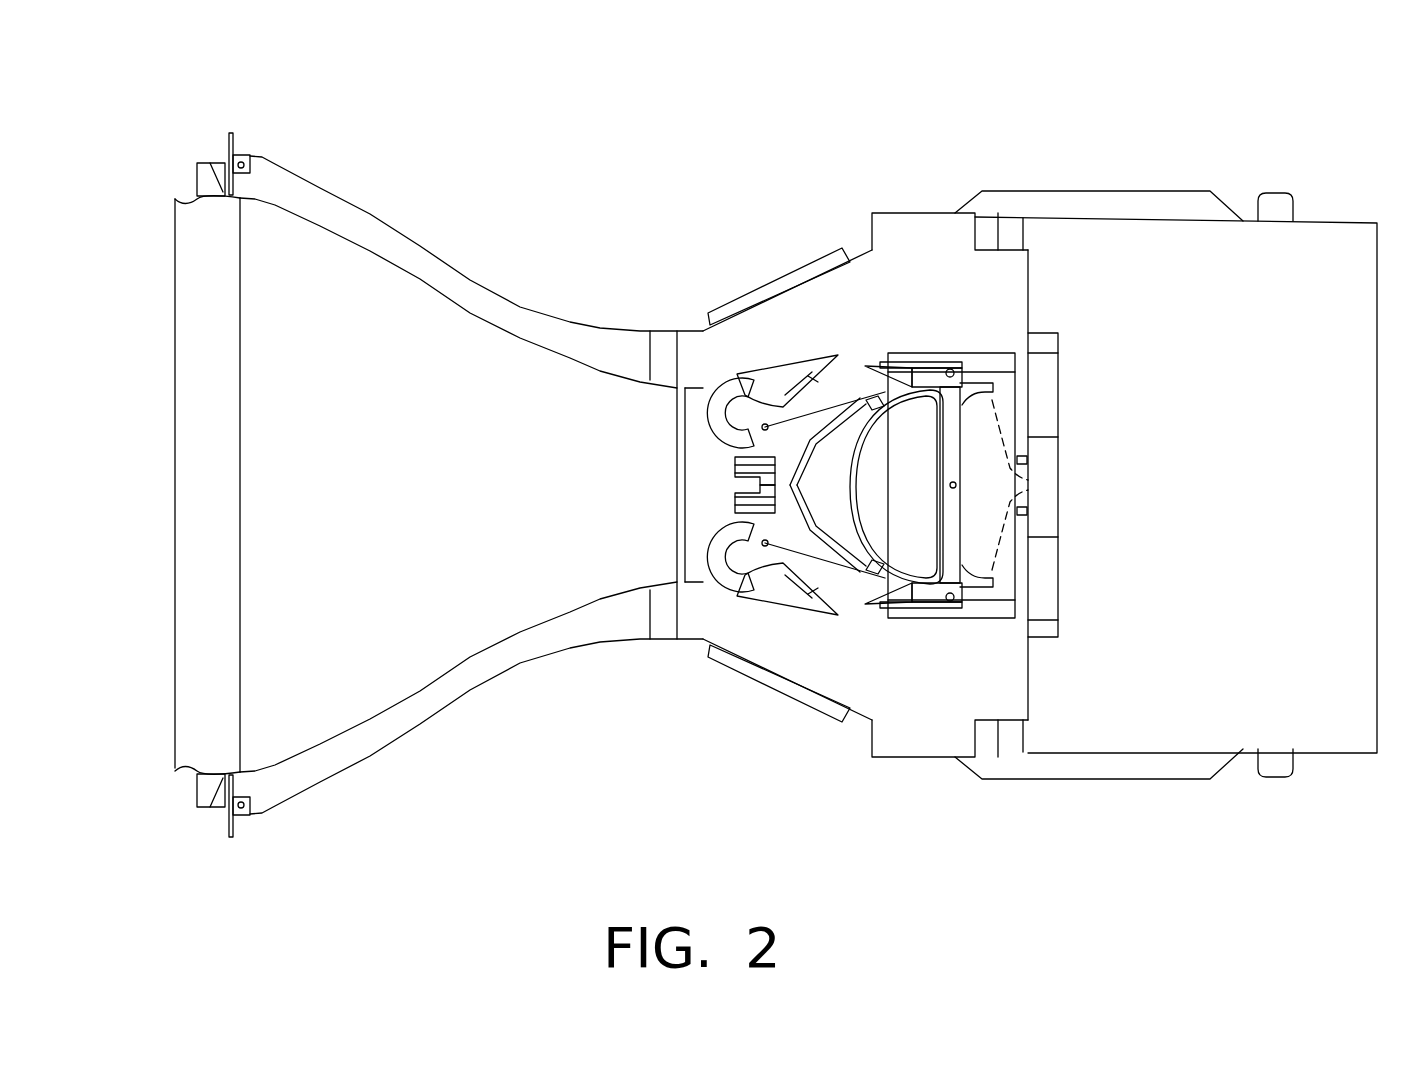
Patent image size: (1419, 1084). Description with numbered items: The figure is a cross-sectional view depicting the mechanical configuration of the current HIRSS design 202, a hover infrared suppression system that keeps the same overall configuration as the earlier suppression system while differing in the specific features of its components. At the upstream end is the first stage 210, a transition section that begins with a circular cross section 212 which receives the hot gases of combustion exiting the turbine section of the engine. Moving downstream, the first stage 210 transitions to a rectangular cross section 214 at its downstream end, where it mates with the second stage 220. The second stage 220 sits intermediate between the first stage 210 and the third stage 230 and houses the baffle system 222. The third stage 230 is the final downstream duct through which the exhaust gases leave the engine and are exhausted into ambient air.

The HIRSS design 202 is at (744, 797).
The first stage 210 is at (325, 170).
The circular cross section 212 is at (252, 772).
The rectangular cross section 214 is at (660, 582).
The second stage 220 is at (792, 200).
The baffle system 222 is at (940, 362).
The third stage 230 is at (1160, 140).